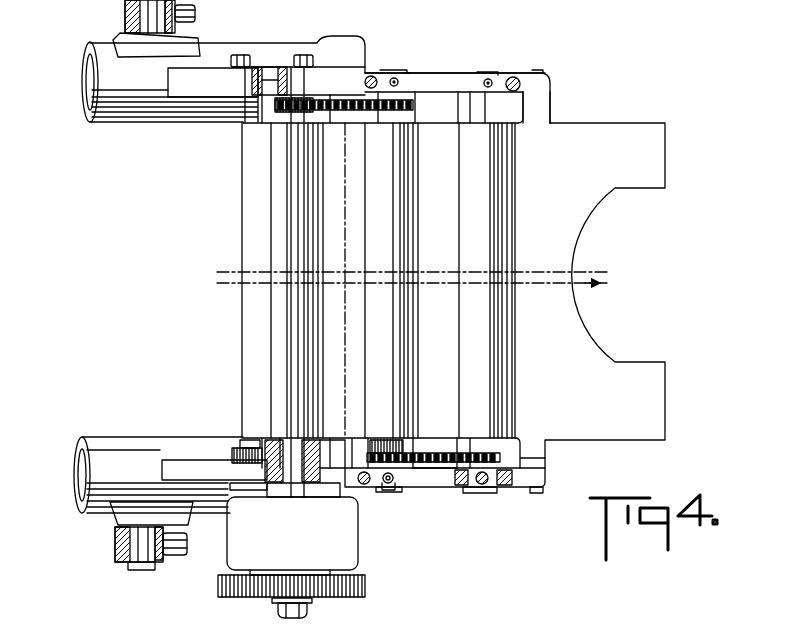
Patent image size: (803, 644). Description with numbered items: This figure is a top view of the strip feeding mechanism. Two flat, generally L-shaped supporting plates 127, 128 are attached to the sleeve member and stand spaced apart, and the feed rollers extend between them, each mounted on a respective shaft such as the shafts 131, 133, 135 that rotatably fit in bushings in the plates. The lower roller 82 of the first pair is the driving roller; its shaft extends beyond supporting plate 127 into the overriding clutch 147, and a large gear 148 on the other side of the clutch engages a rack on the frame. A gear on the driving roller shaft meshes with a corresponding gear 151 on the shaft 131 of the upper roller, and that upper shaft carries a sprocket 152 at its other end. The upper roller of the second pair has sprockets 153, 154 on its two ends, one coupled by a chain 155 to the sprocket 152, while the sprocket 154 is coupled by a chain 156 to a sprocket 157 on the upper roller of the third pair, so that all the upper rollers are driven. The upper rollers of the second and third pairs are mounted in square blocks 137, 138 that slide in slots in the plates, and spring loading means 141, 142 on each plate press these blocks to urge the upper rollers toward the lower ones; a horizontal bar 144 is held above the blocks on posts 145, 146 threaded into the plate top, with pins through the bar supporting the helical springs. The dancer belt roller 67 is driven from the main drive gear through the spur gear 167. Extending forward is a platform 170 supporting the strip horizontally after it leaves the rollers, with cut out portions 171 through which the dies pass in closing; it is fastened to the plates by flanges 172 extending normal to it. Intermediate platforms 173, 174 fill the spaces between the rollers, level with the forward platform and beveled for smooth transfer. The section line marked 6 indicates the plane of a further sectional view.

The section line 6- 6 is at (457, 563).
The dancer belt roller 67 is at (246, 352).
The lower roller 82 is at (287, 315).
The supporting plate 127 is at (173, 437).
The supporting plate 128 is at (212, 80).
The shaft 131 is at (300, 490).
The shaft 133 is at (396, 492).
The shaft 135 is at (494, 493).
The block 137 is at (407, 73).
The block 138 is at (499, 73).
The spring loading means 141 is at (452, 488).
The spring loading means 142 is at (455, 70).
The horizontal bar 144 is at (457, 78).
The post 145 is at (385, 484).
The post 146 is at (396, 80).
The overriding clutch 147 is at (280, 550).
The large gear 148 is at (366, 590).
The gear 151 is at (325, 452).
The sprocket 152 is at (312, 105).
The sprocket 153 is at (372, 78).
The sprocket 154 is at (401, 442).
The chain 155 is at (323, 100).
The chain 156 is at (438, 468).
The sprocket 157 is at (465, 457).
The spur gear 167 is at (222, 442).
The platform 170 is at (647, 418).
The cut out portion 171 is at (642, 270).
The flange 172 is at (540, 98).
The intermediate platform 173 is at (333, 215).
The intermediate platform 174 is at (426, 215).